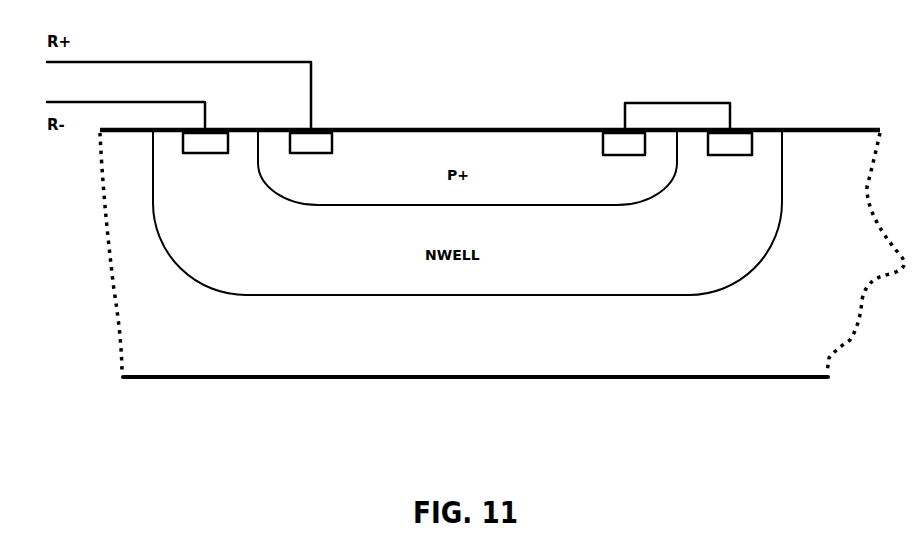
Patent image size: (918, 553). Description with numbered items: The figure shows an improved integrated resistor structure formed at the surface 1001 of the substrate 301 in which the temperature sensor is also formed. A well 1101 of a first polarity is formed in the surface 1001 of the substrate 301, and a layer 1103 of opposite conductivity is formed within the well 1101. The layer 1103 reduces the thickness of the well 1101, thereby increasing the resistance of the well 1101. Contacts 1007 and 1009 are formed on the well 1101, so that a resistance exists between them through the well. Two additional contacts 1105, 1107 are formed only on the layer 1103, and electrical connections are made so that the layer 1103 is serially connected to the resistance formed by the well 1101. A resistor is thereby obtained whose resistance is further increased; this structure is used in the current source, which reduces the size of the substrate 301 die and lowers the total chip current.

The substrate 301 is at (308, 352).
The surface 1001 is at (497, 119).
The contact 1007 is at (740, 130).
The contact 1009 is at (192, 142).
The well 1101 is at (663, 278).
The layer 1103 is at (600, 190).
The additional contact 1105 is at (307, 140).
The additional contact 1107 is at (591, 153).